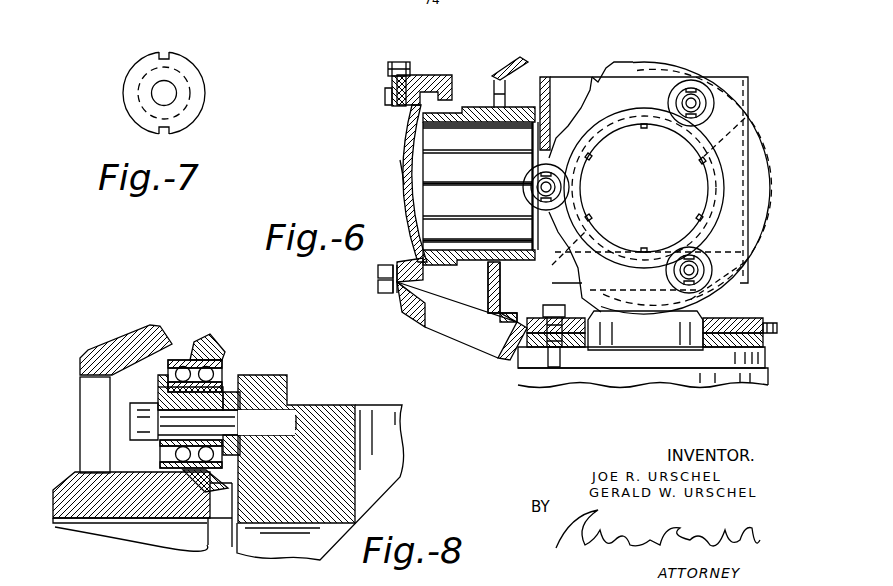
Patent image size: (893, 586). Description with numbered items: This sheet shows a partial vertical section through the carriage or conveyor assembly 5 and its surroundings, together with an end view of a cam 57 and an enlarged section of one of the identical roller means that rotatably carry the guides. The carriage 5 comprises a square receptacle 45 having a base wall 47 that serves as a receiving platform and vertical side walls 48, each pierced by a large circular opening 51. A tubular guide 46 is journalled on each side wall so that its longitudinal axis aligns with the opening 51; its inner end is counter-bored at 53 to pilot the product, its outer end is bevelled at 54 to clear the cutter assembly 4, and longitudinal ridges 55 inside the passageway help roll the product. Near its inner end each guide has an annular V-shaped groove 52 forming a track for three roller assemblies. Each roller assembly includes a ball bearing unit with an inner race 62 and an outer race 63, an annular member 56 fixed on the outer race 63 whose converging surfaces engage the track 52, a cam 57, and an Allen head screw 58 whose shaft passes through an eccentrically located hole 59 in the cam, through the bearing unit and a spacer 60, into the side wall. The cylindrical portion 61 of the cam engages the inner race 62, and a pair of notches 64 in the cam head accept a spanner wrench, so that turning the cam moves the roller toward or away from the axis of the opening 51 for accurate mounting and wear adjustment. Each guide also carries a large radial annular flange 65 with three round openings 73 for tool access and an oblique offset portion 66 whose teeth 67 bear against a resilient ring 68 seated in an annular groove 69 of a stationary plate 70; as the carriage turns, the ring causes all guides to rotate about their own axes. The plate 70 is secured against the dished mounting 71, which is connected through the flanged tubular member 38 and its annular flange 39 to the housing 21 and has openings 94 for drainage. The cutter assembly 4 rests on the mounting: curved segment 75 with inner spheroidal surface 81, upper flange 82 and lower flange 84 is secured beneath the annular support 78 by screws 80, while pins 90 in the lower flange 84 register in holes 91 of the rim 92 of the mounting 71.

In FIG. 6, the cutter assembly 4 is at (374, 90).
In FIG. 6, the carriage or conveyor assembly 5 is at (755, 60).
In FIG. 8, the carriage or conveyor assembly 5 is at (350, 401).
In FIG. 6, the housing 21 is at (768, 380).
In FIG. 6, the cylindrical tubular member 38 is at (645, 330).
In FIG. 6, the annular flange 39 is at (766, 358).
In FIG. 6, the receptacle 45 is at (750, 80).
In FIG. 8, the receptacle 45 is at (287, 375).
In FIG. 6, the tubular guides 46 is at (462, 108).
In FIG. 8, the tubular guides 46 is at (62, 482).
In FIG. 6, the base wall 47 is at (750, 280).
In FIG. 6, the side walls 48 is at (592, 78).
In FIG. 6, the circular opening 51 is at (538, 165).
In FIG. 8, the circular opening 51 is at (393, 461).
In FIG. 6, the annular V-shaped exterior groove 52 is at (531, 107).
In FIG. 8, the annular V-shaped exterior groove 52 is at (180, 480).
In FIG. 6, the counter-bore 53 is at (532, 140).
In FIG. 8, the counter-bore 53 is at (222, 548).
In FIG. 6, the bevel 54 is at (435, 264).
In FIG. 6, the longitudinal ridges 55 is at (498, 152).
In FIG. 8, the longitudinal ridges 55 is at (92, 530).
In FIG. 6, the annular rim or member 56 is at (670, 104).
In FIG. 8, the annular rim or member 56 is at (218, 344).
In FIG. 7, the cam 57 is at (204, 95).
In FIG. 6, the cam 57 is at (700, 90).
In FIG. 8, the cam 57 is at (158, 383).
In FIG. 6, the screw 58 is at (695, 96).
In FIG. 8, the screw 58 is at (149, 440).
In FIG. 7, the eccentrically located hole 59 is at (172, 87).
In FIG. 8, the eccentrically located hole 59 is at (165, 410).
In FIG. 8, the spacer 60 is at (232, 415).
In FIG. 8, the cylindrical portion 61 is at (158, 398).
In FIG. 8, the inner race 62 is at (225, 375).
In FIG. 8, the outer race 63 is at (178, 360).
In FIG. 7, the notches 64 is at (161, 50).
In FIG. 6, the notches 64 is at (684, 86).
In FIG. 6, the radial annular flange 65 is at (755, 150).
In FIG. 8, the radial annular flange 65 is at (80, 372).
In FIG. 6, the annular offset portion 66 is at (498, 338).
In FIG. 8, the annular offset portion 66 is at (130, 332).
In FIG. 6, the teeth or serrations 67 is at (540, 52).
In FIG. 8, the teeth or serrations 67 is at (168, 330).
In FIG. 6, the resilient ring 68 is at (775, 322).
In FIG. 6, the annular groove 69 is at (764, 336).
In FIG. 6, the stationary plate 70 is at (732, 318).
In FIG. 6, the mounting 71 is at (403, 316).
In FIG. 6, the round openings 73 is at (506, 86).
In FIG. 8, the round openings 73 is at (82, 390).
In FIG. 6, the curved elongate segment 75 is at (405, 140).
In FIG. 6, the annular support 78 is at (437, 75).
In FIG. 6, the screws 80 is at (395, 62).
In FIG. 6, the inner spheroidal surface 81 is at (408, 158).
In FIG. 6, the upper horizontal outer flange 82 is at (385, 100).
In FIG. 6, the lower horizontal outer flange 84 is at (378, 272).
In FIG. 6, the pins 90 is at (400, 266).
In FIG. 6, the holes 91 is at (397, 292).
In FIG. 6, the rim 92 is at (378, 290).
In FIG. 6, the openings 94 is at (480, 345).